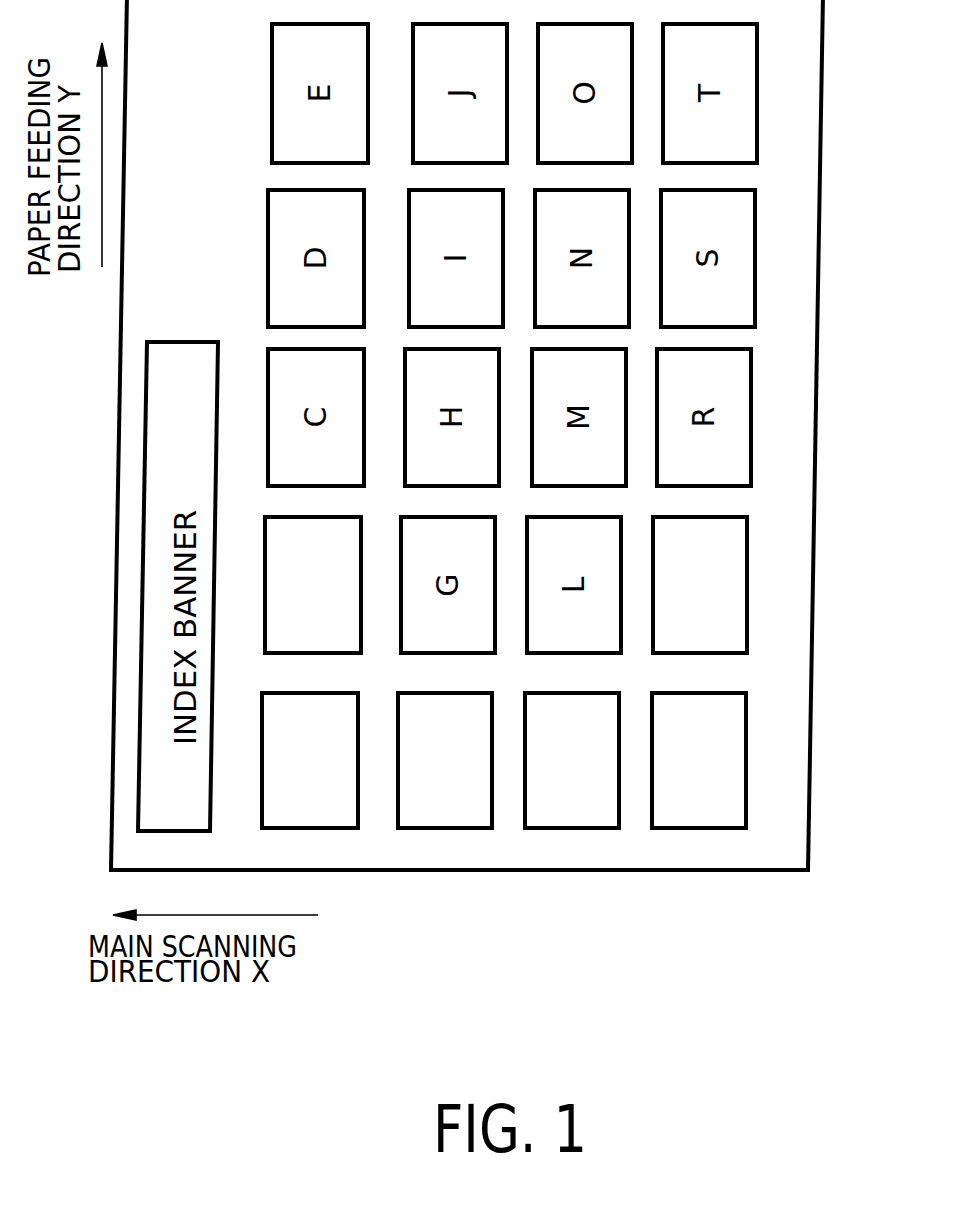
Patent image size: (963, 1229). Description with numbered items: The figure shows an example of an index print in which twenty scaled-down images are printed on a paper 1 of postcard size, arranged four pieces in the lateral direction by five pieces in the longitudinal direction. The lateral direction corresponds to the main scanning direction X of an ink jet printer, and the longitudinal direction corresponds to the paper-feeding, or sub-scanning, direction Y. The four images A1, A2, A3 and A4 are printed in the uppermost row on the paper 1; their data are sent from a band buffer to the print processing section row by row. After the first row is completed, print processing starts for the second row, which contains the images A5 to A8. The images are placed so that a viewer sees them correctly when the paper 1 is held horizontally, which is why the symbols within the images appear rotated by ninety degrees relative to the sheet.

The paper 1 is at (778, 783).
The scaled-down image A1 is at (708, 805).
The scaled-down image A2 is at (595, 805).
The scaled-down image A3 is at (468, 805).
The scaled-down image A4 is at (330, 805).
The scaled-down image A5 is at (730, 557).
The scaled-down image A8 is at (280, 537).